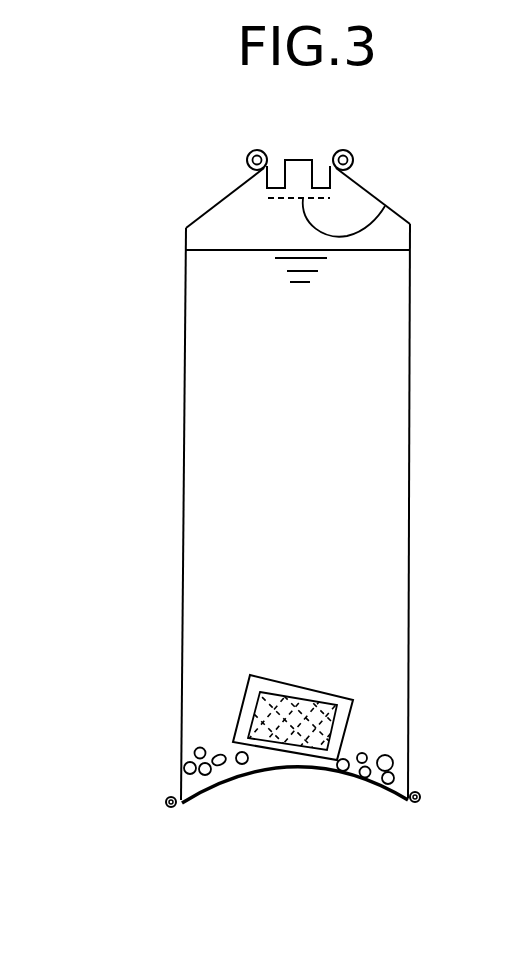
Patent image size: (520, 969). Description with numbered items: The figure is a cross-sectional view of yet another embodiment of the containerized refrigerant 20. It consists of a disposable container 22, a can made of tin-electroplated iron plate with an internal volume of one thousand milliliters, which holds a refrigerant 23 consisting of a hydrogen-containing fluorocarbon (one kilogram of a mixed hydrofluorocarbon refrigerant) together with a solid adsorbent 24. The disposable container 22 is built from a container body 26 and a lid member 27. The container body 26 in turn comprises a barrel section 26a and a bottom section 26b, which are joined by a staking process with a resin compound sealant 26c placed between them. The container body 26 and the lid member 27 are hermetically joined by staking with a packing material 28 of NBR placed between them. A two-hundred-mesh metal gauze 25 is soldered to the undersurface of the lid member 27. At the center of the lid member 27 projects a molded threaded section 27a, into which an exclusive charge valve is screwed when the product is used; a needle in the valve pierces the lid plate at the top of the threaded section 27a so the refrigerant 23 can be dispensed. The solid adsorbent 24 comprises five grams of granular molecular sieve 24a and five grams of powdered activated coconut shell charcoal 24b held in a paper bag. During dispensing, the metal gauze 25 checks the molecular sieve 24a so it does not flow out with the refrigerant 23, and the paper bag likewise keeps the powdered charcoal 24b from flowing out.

The containerized refrigerant 20 is at (156, 230).
The disposable container 22 is at (184, 355).
The refrigerant 23 is at (212, 440).
The solid adsorbent 24 is at (112, 642).
The granular molecular sieve 24a is at (212, 745).
The powdered activated coconut shell charcoal 24b is at (240, 702).
The metal gauze 25 is at (377, 210).
The container body 26 is at (413, 223).
The barrel section 26a is at (410, 470).
The bottom section 26b is at (290, 775).
The resin compound sealant 26c is at (423, 795).
The lid member 27 is at (303, 161).
The threaded section 27a is at (279, 162).
The packing material 28 is at (247, 162).